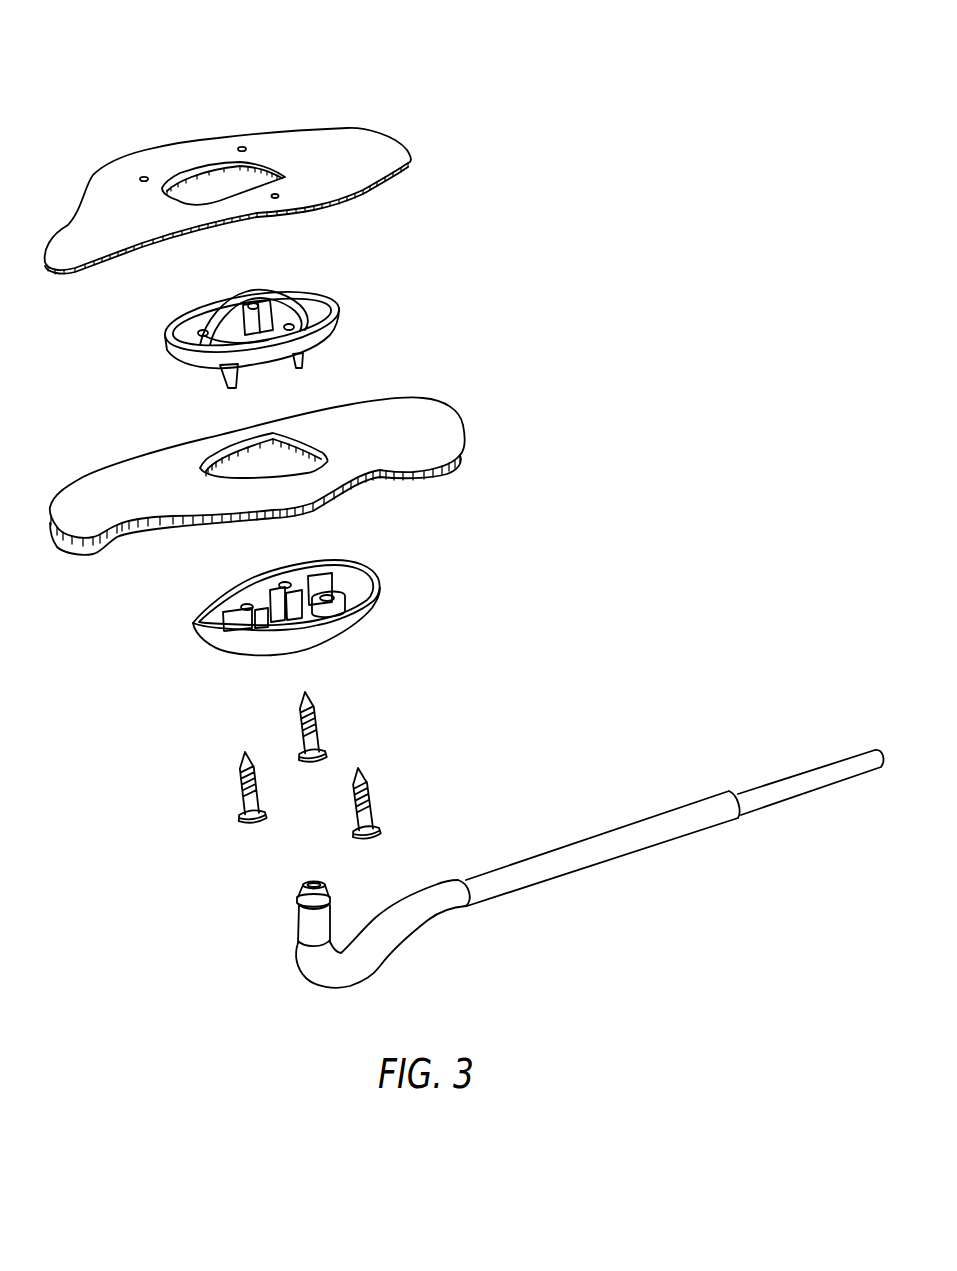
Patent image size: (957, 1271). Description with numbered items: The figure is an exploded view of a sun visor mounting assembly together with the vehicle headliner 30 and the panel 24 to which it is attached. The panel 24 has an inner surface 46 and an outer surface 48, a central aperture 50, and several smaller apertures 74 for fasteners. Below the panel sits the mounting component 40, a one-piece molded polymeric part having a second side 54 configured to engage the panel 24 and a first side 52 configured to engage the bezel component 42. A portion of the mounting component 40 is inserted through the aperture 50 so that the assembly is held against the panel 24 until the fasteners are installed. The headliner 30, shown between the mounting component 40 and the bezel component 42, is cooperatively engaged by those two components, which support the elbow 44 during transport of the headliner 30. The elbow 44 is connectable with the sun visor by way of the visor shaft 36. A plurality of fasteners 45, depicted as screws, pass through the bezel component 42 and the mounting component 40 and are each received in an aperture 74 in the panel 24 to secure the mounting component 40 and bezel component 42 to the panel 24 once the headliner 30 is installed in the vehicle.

The panel 24 is at (253, 169).
The headliner 30 is at (465, 413).
The visor shaft 36 is at (589, 878).
The mounting component 40 is at (289, 315).
The bezel component 42 is at (382, 585).
The elbow 44 is at (380, 975).
The fasteners 45 is at (317, 730).
The inner surface 46 is at (335, 145).
The outer surface 48 is at (367, 197).
The aperture 50 is at (211, 194).
The first side 52 is at (323, 342).
The second side 54 is at (305, 293).
The aperture 74 is at (141, 177).